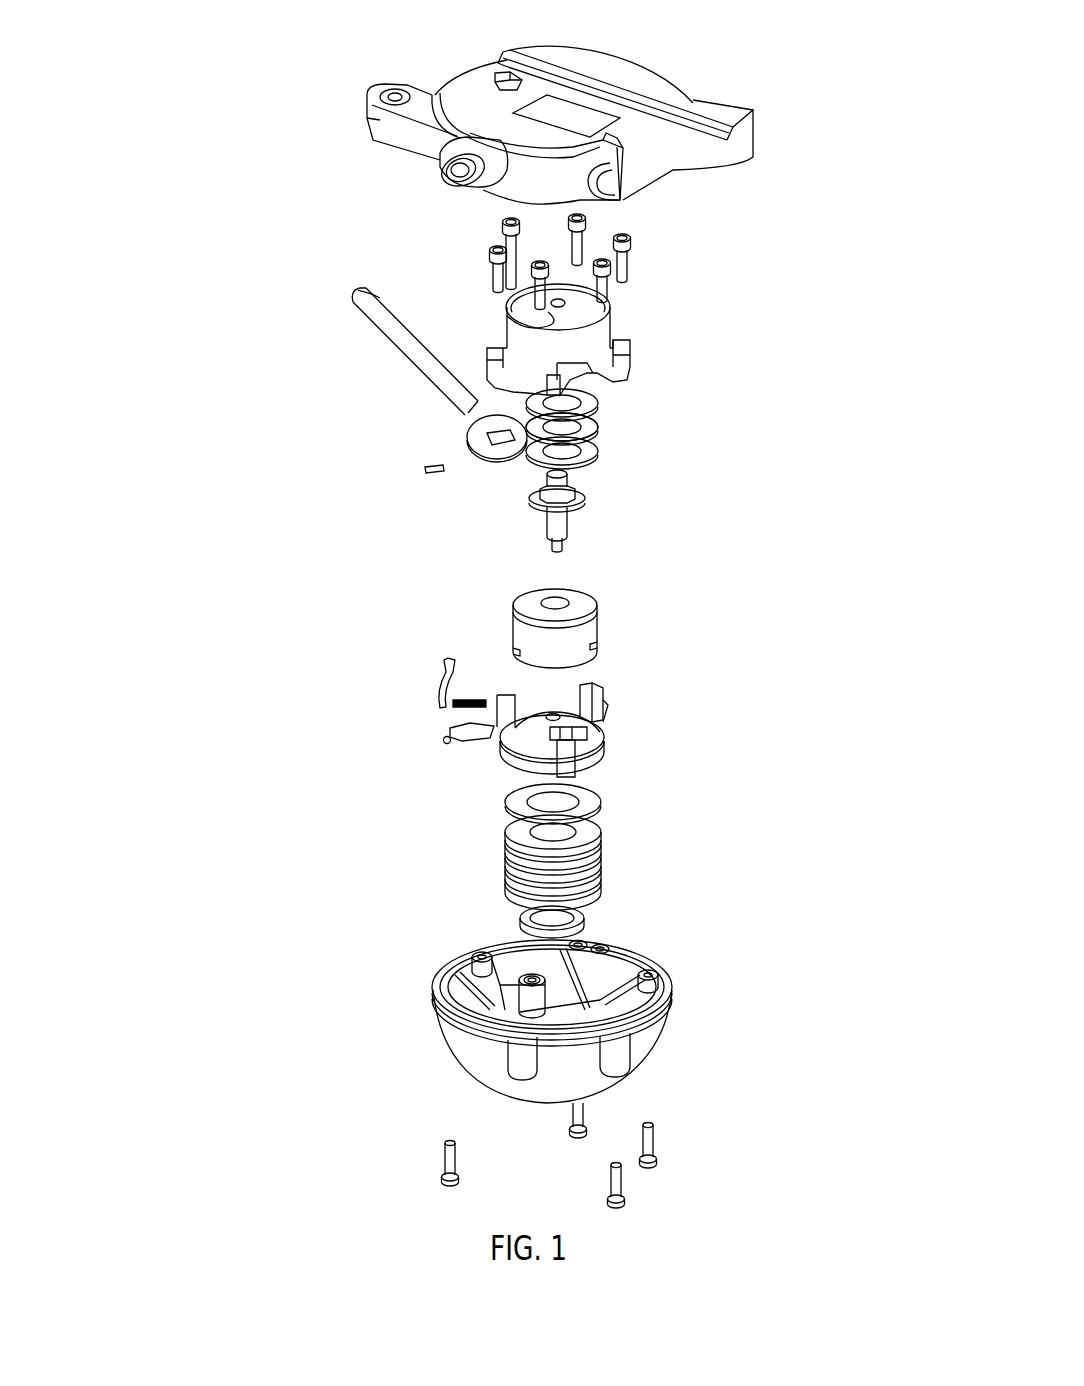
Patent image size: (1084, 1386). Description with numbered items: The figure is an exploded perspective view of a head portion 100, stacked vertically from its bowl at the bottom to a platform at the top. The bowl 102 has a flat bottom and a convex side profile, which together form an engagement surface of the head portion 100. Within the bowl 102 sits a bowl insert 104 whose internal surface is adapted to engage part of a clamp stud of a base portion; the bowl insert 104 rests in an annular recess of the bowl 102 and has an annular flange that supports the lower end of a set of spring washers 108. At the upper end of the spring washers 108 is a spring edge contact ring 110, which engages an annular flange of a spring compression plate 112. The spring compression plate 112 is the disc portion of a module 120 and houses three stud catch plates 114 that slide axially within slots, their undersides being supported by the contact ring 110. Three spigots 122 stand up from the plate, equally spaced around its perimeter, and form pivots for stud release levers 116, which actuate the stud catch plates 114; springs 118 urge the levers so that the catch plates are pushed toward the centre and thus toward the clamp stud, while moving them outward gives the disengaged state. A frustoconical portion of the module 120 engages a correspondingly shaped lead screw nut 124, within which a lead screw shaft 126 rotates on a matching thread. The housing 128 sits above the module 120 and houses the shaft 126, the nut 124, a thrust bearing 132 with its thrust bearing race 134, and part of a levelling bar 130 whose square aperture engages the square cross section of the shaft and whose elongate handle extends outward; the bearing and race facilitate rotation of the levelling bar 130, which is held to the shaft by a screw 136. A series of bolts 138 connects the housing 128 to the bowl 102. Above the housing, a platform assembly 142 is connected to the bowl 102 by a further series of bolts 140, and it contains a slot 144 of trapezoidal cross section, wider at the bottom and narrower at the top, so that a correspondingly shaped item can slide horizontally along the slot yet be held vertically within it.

The head portion 100 is at (268, 602).
The bowl 102 is at (435, 1038).
The bowl insert 104 is at (588, 925).
The set of spring washers 108 is at (607, 870).
The spring edge contact ring 110 is at (605, 802).
The spring compression plate 112 is at (510, 753).
The stud catch plates 114 is at (443, 747).
The stud release levers 116 is at (442, 662).
The springs 118 is at (450, 716).
The module 120 is at (605, 742).
The spigots 122 is at (607, 687).
The lead screw nut 124 is at (593, 627).
The lead screw shaft 126 is at (590, 503).
The housing 128 is at (523, 338).
The levelling bar 130 is at (467, 425).
The thrust bearing 132 is at (588, 422).
The thrust bearing race 134 is at (517, 407).
The screw 136 is at (427, 471).
The bolts 138 is at (480, 253).
The bolts 140 is at (654, 1140).
The platform assembly 142 is at (754, 130).
The slot 144 is at (490, 59).